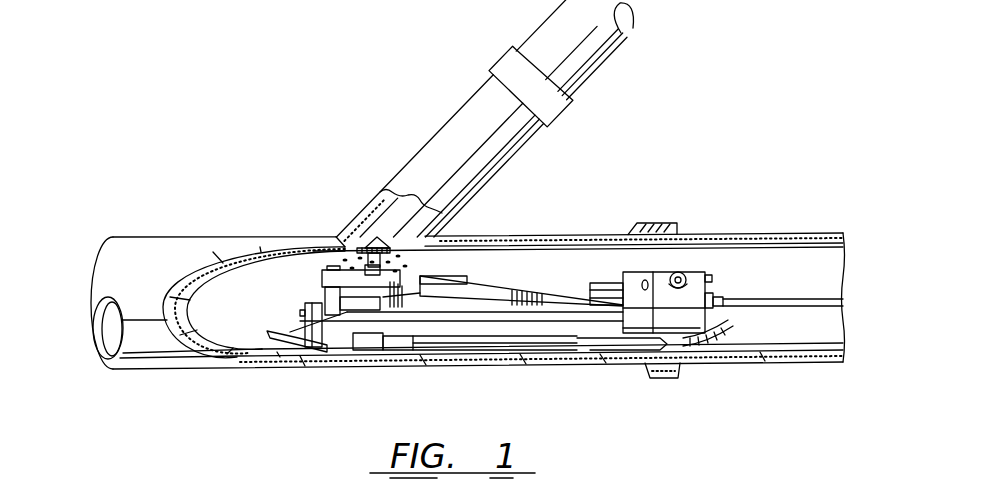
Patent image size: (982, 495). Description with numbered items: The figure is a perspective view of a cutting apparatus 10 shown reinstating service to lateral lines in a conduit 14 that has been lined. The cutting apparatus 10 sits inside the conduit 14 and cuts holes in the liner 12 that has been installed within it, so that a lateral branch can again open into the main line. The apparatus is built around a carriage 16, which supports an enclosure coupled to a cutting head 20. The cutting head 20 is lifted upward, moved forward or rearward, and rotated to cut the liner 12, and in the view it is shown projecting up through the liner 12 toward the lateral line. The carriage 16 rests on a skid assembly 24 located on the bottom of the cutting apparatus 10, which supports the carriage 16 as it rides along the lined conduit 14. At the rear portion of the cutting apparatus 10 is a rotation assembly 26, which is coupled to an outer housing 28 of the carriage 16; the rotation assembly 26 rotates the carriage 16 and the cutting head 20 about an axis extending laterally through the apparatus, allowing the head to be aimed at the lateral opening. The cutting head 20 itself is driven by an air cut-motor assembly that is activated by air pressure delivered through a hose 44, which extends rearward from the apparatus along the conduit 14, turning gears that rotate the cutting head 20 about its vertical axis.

The cutting apparatus 10 is at (517, 283).
The liner 12 is at (800, 240).
The conduit 14 is at (728, 233).
The carriage 16 is at (482, 340).
The cutting head 20 is at (393, 238).
The skid assembly 24 is at (304, 347).
The rotation assembly 26 is at (680, 322).
The outer housing 28 is at (572, 323).
The hose 44 is at (748, 298).